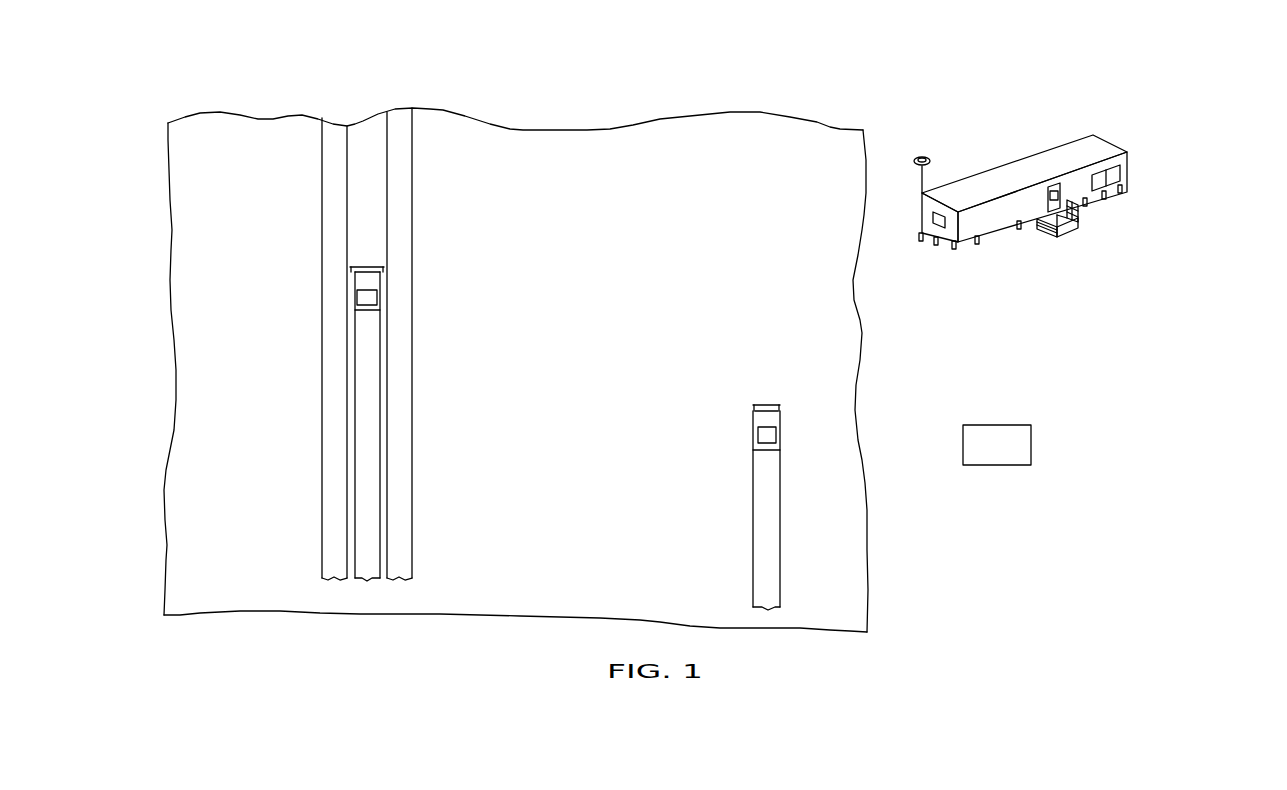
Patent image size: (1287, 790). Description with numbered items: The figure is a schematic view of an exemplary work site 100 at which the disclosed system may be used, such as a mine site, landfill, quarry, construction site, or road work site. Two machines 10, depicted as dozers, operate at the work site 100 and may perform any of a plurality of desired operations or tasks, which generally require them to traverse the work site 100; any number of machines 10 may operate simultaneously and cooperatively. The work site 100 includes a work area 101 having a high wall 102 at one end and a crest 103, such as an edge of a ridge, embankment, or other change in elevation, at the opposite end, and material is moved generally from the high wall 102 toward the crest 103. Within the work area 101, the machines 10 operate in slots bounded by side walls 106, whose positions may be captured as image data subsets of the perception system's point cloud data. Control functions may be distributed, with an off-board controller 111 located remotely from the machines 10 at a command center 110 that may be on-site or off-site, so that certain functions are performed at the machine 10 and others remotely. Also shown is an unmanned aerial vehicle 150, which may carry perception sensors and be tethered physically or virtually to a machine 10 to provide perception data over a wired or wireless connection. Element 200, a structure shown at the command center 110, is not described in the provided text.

The work site 100 is at (195, 88).
The work area 101 is at (215, 243).
The high wall 102 is at (800, 627).
The crest 103 is at (274, 118).
The side wall 106 is at (350, 368).
The command center 110 is at (368, 423).
The machine 10 is at (363, 308).
The off-board controller 111 is at (1130, 116).
The antenna / communication unit 200 is at (930, 160).
The unmanned aerial vehicle 150 is at (995, 418).